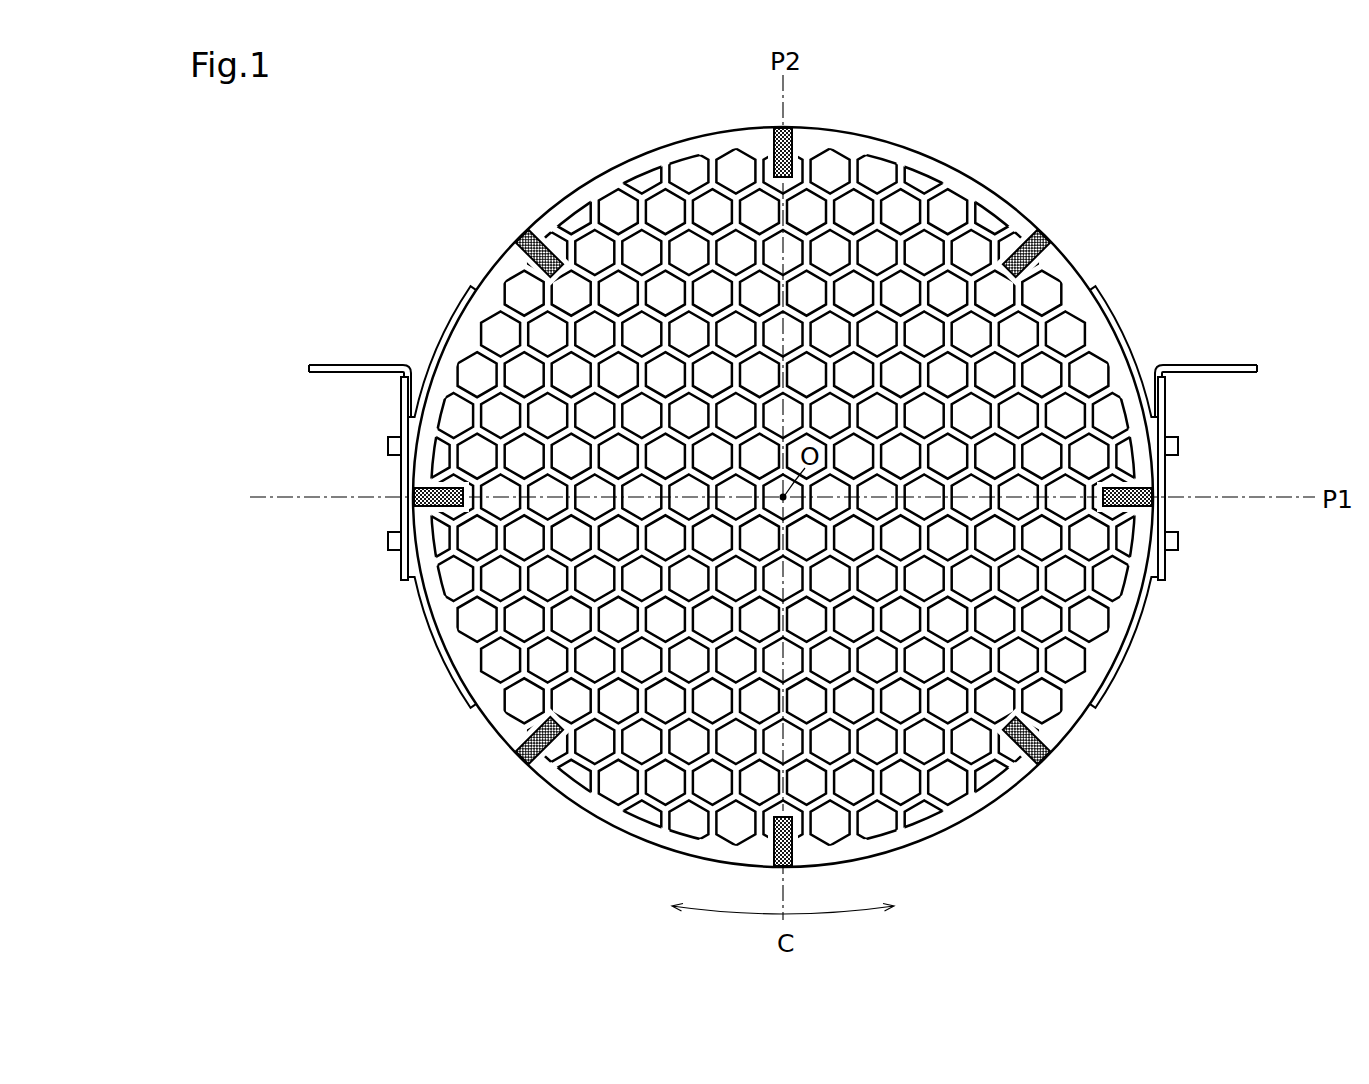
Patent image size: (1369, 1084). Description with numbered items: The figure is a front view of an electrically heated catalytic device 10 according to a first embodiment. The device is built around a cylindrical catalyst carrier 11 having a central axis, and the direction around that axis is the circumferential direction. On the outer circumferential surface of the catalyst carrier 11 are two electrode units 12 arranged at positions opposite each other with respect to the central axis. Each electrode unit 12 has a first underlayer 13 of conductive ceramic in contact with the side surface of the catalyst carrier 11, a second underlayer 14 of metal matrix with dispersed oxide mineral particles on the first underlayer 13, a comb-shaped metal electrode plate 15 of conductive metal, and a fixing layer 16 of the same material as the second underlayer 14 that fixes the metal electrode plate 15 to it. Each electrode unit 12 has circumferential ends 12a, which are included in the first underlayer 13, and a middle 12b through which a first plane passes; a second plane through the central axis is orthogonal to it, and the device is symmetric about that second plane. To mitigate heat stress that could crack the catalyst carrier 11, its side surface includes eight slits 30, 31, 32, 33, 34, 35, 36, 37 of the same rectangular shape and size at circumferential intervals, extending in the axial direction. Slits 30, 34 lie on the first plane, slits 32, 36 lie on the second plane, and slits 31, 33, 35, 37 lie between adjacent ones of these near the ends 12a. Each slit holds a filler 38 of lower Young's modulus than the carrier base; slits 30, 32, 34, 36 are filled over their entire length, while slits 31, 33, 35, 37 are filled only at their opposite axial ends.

The electrically heated catalytic device 10 is at (492, 152).
The catalyst carrier 11 is at (958, 180).
The electrode unit 12 is at (791, 498).
The ends of electrode unit 12a is at (466, 290).
The middle of electrode unit 12b is at (402, 495).
The first underlayer 13 is at (428, 636).
The second underlayer 14 is at (401, 517).
The metal electrode plate 15 is at (352, 365).
The fixing layer 16 is at (390, 445).
The slit 30 is at (1125, 495).
The slit 31 is at (1028, 750).
The slit 32 is at (776, 843).
The slit 33 is at (520, 745).
The slit 34 is at (440, 495).
The slit 35 is at (548, 244).
The slit 36 is at (791, 140).
The slit 37 is at (1045, 256).
The filler 38 is at (780, 130).